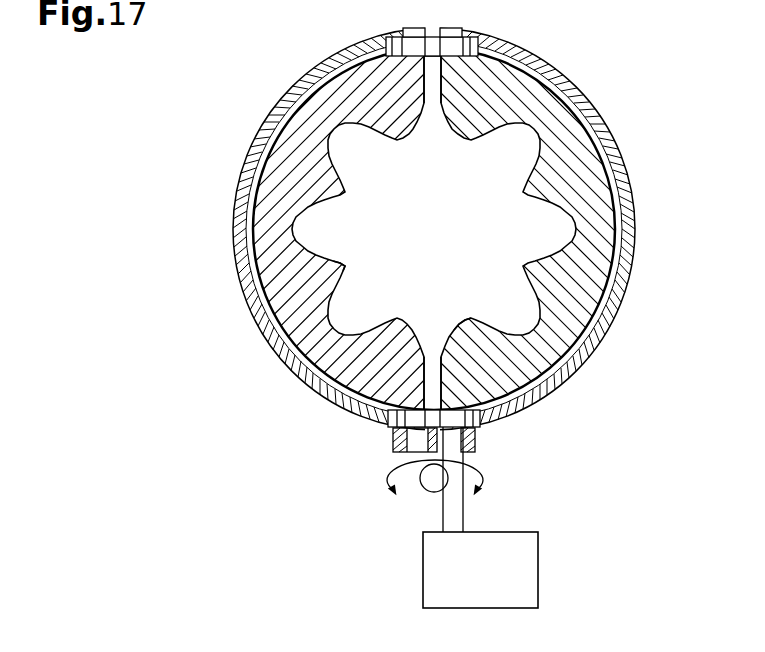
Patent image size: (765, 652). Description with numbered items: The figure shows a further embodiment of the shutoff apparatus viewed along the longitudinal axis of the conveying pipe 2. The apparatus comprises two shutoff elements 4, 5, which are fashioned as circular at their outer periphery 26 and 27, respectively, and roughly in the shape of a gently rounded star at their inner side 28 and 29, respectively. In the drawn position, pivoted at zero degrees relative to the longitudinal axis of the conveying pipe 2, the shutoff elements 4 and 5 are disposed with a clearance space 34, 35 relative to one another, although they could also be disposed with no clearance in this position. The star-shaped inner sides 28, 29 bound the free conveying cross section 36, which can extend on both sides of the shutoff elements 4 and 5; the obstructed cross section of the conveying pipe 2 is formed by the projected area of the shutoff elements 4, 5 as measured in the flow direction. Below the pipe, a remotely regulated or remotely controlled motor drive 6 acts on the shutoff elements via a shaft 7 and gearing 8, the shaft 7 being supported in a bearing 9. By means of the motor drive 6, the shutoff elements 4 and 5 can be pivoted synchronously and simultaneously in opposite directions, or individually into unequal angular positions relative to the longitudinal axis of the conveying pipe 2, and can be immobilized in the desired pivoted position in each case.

The conveying pipe 2 is at (268, 352).
The shutoff element 4 is at (272, 290).
The shutoff element 5 is at (588, 263).
The motor drive 6 is at (432, 570).
The shaft 7 is at (457, 517).
The gearing 8 is at (393, 452).
The bearing 9 is at (482, 422).
The outer periphery 26 is at (255, 147).
The outer periphery 27 is at (603, 298).
The inner side 28 is at (342, 264).
The inner side 29 is at (465, 322).
The clearance space 34 is at (437, 80).
The clearance space 35 is at (432, 392).
The free conveying cross section 36 is at (488, 207).